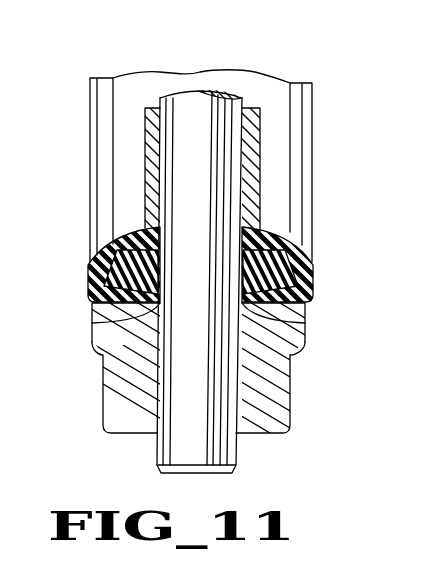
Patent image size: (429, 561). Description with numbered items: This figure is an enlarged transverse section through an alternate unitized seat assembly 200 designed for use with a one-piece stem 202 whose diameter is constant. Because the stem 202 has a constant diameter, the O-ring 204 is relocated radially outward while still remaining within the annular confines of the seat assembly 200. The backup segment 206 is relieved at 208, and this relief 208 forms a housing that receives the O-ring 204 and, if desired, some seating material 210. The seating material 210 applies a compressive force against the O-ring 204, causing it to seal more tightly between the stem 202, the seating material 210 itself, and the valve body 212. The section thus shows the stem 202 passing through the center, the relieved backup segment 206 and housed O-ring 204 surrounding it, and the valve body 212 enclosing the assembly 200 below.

The unitized seat assembly 200 is at (320, 260).
The stem 202 is at (188, 97).
The O-ring 204 is at (305, 322).
The backup segment 206 is at (88, 268).
The relief 208 is at (93, 299).
The seating material 210 is at (92, 323).
The valve body 212 is at (272, 388).